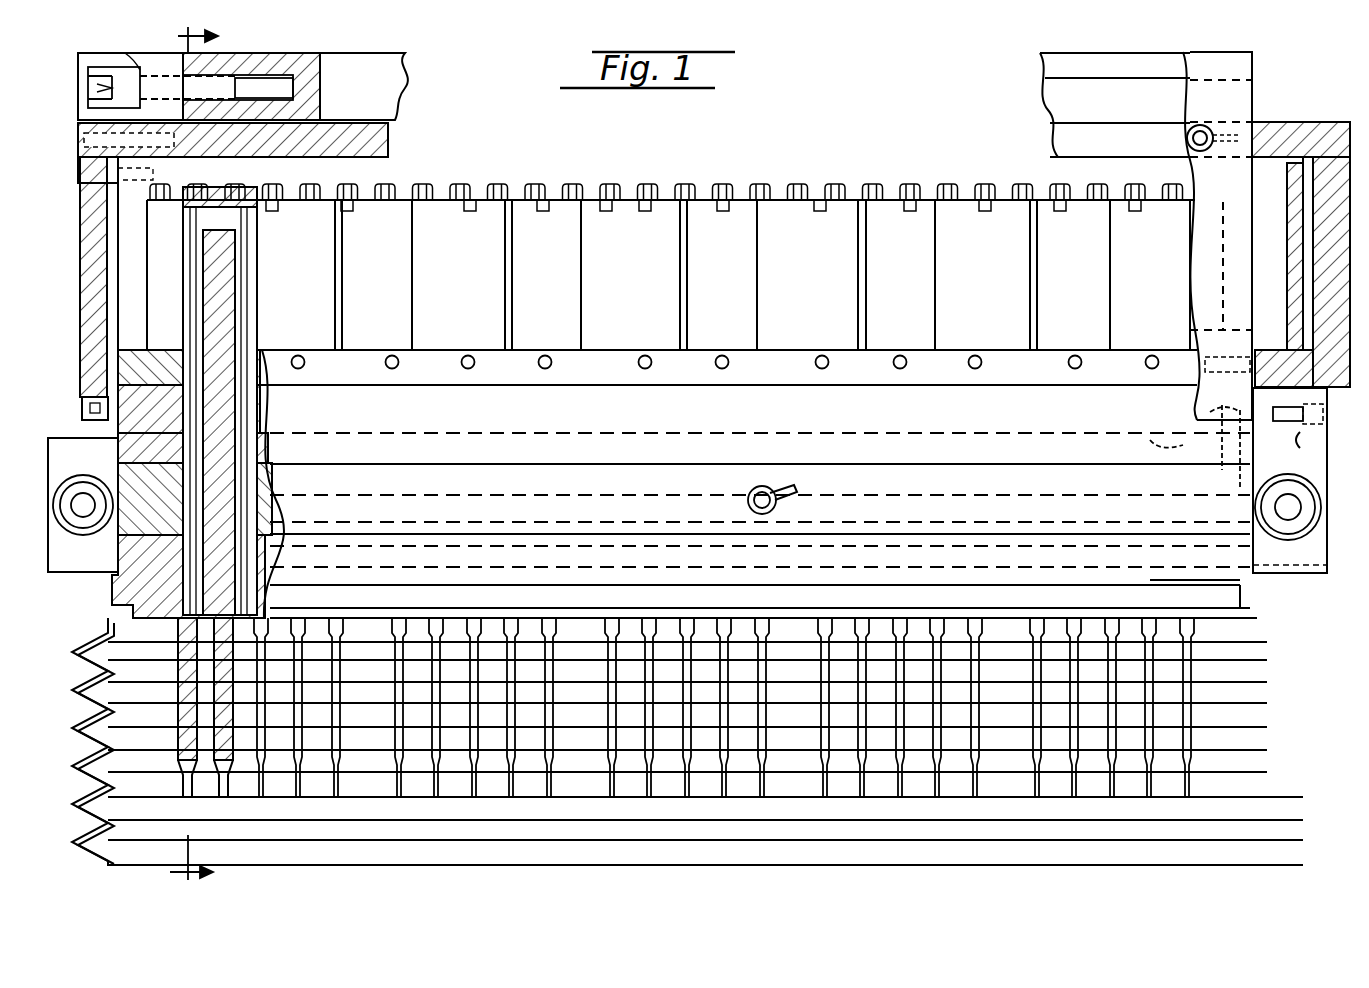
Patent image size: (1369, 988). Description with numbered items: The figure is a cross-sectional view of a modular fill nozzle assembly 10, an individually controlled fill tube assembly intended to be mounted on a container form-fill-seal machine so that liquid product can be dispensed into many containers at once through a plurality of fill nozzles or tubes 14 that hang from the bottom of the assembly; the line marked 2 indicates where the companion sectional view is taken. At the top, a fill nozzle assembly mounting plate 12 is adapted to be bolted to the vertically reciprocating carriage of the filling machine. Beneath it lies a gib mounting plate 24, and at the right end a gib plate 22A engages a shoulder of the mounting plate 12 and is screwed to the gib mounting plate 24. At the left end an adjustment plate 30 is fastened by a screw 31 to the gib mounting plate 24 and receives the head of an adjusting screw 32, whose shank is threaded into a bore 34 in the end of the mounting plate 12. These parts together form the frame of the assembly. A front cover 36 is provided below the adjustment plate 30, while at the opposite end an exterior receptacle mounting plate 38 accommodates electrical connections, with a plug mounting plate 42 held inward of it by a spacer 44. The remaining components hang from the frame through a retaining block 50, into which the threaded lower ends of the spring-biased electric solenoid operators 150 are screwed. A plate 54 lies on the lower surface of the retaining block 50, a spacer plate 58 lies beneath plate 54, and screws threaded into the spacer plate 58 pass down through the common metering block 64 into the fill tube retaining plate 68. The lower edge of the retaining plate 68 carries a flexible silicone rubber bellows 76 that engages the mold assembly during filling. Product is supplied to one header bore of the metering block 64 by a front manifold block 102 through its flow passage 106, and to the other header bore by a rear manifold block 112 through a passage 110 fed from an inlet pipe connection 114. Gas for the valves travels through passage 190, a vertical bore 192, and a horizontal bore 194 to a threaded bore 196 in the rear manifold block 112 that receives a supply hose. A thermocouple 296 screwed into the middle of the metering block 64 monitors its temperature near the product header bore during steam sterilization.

The section line 2- 2 is at (191, 453).
The fill nozzle assembly 10 is at (938, 78).
The fill nozzle assembly mounting plate 12 is at (316, 58).
The fill nozzles or tubes 14 is at (188, 794).
The gib plate 22A is at (1242, 98).
The gib mounting plate 24 is at (392, 152).
The adjustment plate 30 is at (82, 60).
The screw 31 is at (74, 138).
The adjusting screw 32 is at (150, 60).
The bore 34 is at (266, 80).
The front cover 36 is at (84, 246).
The exterior receptacle mounting plate 38 is at (1345, 122).
The plug mounting plate 42 is at (1290, 202).
The spacer 44 is at (1265, 350).
The retaining block 50 is at (122, 340).
The plate 54 is at (118, 430).
The spacer plate 58 is at (118, 450).
The common metering block or manifold 64 is at (118, 484).
The fill tube retaining plate 68 is at (115, 622).
The bellows 76 is at (92, 800).
The front manifold block 102 is at (52, 575).
The flow passage 106 is at (84, 522).
The passage 110 is at (1300, 500).
The rear manifold block 112 is at (1300, 448).
The inlet pipe connection 114 is at (1310, 528).
The solenoid operator 150 is at (196, 186).
The passage 190 is at (1150, 445).
The vertical bore 192 is at (1215, 460).
The horizontal bore 194 is at (1242, 463).
The threaded bore 196 is at (1318, 426).
The thermocouple 296 is at (766, 496).